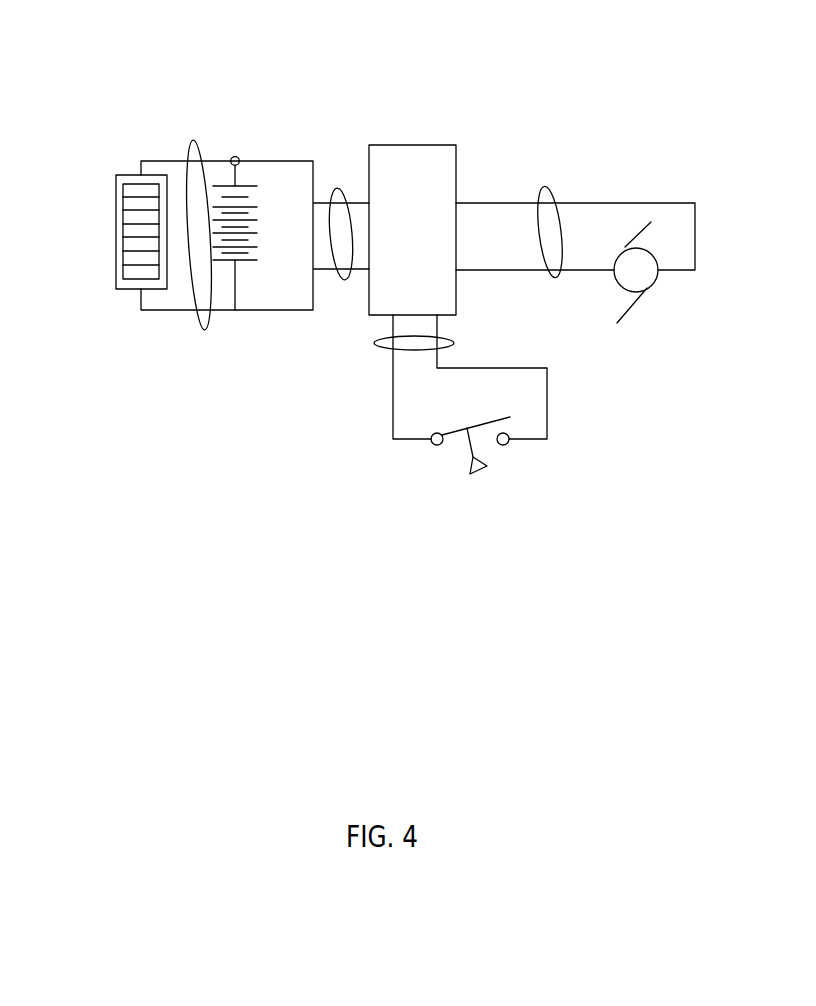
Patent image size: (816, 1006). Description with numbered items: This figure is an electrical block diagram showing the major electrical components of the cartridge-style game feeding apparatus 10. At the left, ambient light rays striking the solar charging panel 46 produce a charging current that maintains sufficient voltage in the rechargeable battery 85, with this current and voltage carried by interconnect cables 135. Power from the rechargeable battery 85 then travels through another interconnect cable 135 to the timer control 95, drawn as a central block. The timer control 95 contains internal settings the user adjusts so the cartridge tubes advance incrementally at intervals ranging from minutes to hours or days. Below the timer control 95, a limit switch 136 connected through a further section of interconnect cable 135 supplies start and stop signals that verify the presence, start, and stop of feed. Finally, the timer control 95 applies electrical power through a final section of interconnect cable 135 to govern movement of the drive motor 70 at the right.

The cartridge-style game feeding apparatus 10 is at (225, 507).
The solar charging panel 46 is at (132, 195).
The drive motor 70 is at (652, 288).
The rechargeable battery 85 is at (250, 205).
The timer control 95 is at (402, 190).
The interconnect cable 135 is at (192, 140).
The limit switch 136 is at (452, 457).